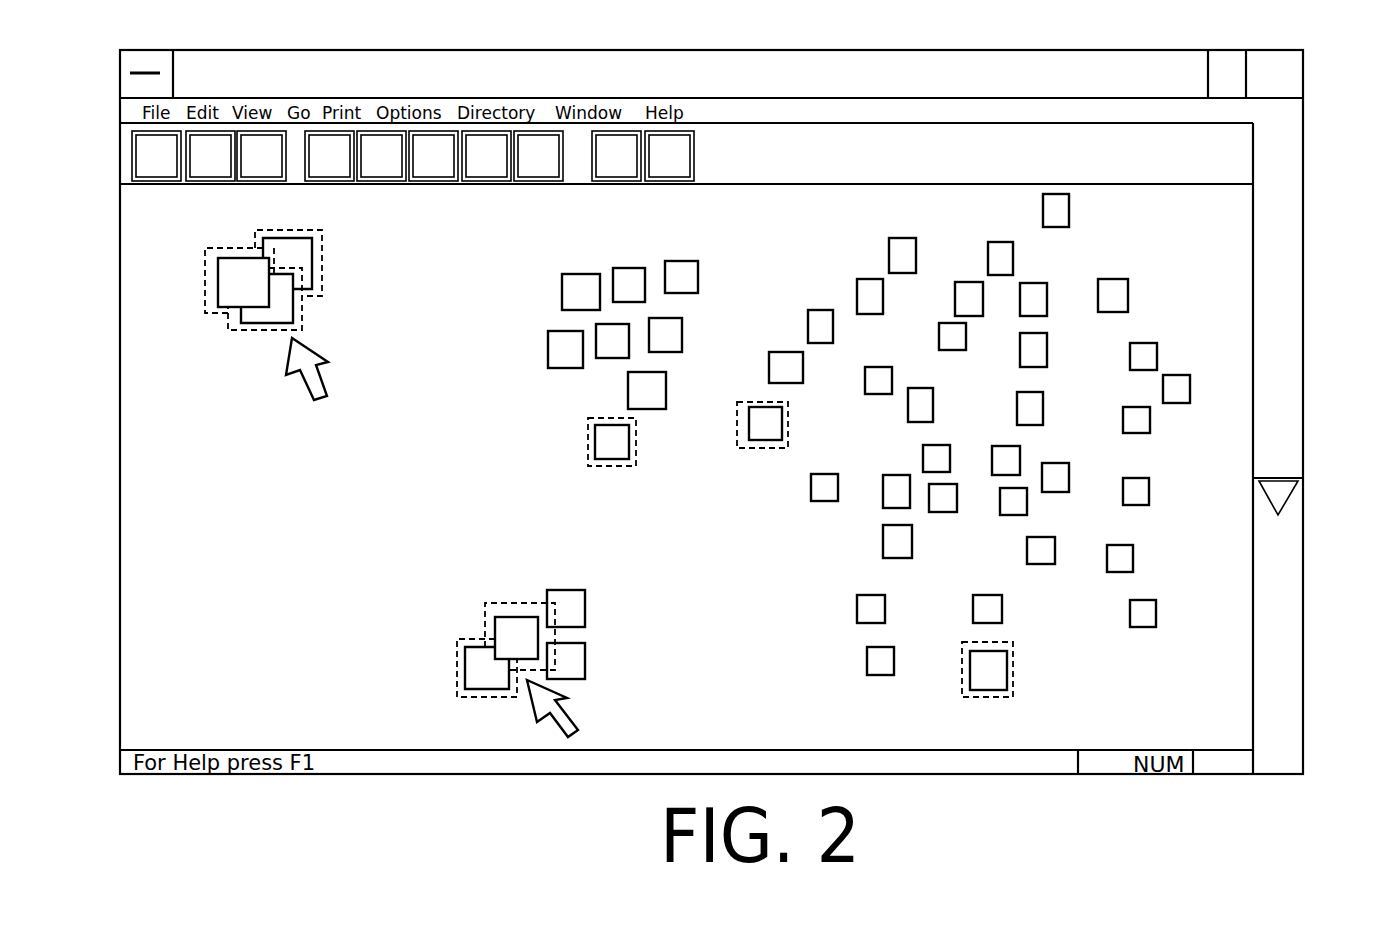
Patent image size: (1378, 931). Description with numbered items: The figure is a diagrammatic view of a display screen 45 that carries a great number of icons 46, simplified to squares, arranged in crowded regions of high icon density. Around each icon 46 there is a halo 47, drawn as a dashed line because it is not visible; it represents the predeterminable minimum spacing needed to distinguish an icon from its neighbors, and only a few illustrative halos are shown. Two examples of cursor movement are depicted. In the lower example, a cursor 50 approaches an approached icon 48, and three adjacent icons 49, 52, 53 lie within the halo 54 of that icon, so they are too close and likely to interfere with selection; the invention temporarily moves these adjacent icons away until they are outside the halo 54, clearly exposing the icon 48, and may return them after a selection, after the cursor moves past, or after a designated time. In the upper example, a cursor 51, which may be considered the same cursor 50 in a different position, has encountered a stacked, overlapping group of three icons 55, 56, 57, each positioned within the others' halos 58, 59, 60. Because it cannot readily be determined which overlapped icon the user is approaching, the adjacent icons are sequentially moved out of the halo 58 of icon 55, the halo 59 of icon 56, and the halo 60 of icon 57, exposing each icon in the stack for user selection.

The display screen 45 is at (1213, 366).
The icon 46 is at (645, 390).
The halo 47 is at (636, 445).
The approached icon 48 is at (520, 627).
The adjacent icon 49 is at (577, 605).
The cursor 50 is at (560, 703).
The cursor 51 is at (318, 373).
The adjacent icon 52 is at (573, 663).
The adjacent icon 53 is at (480, 680).
The halo 54 is at (492, 608).
The overlapped icon 55 is at (257, 293).
The overlapped icon 56 is at (262, 318).
The overlapped icon 57 is at (302, 255).
The halo 58 is at (210, 276).
The halo 59 is at (238, 325).
The halo 60 is at (293, 232).